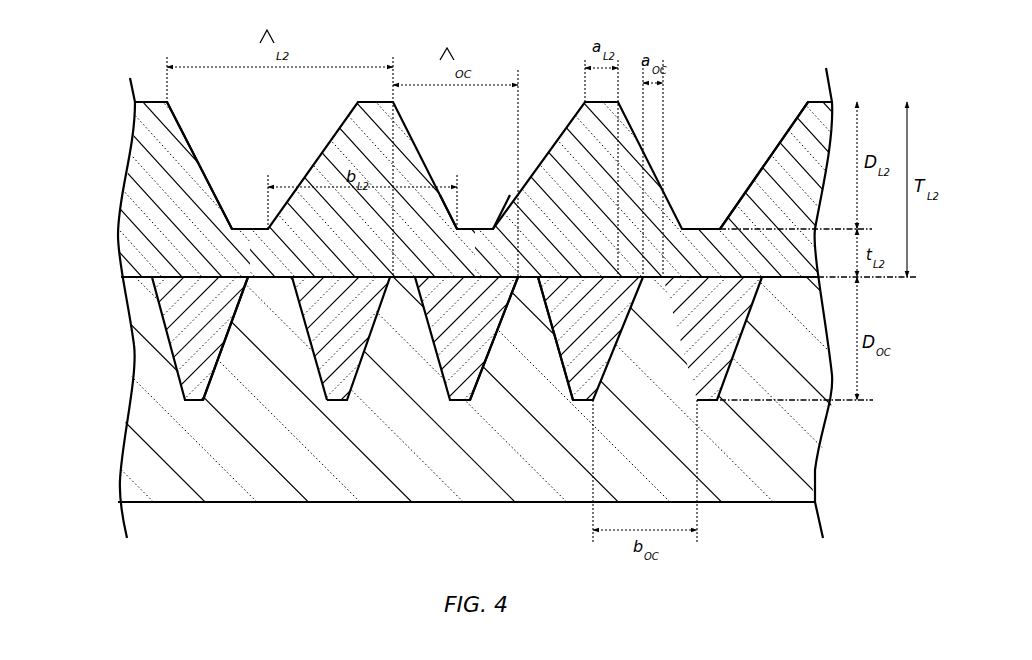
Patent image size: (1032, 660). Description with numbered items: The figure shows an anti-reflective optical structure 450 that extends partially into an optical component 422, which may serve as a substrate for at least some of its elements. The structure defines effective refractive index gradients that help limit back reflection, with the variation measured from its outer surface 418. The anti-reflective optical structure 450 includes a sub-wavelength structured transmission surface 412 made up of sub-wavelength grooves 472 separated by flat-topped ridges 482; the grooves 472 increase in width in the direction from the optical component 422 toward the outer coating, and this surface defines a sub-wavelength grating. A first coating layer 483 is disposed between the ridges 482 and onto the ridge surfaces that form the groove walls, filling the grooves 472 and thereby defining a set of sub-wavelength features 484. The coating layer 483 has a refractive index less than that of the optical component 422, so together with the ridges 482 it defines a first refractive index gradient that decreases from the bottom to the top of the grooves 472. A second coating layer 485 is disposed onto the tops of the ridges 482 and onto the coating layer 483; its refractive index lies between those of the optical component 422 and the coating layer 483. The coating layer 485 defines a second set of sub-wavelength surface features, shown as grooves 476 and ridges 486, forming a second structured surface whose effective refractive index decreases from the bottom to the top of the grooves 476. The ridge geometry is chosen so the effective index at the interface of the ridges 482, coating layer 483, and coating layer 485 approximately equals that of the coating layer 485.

The anti-reflective optical structure 450 is at (915, 102).
The optical component 422 is at (820, 434).
The ridges 486 is at (147, 97).
The outer surface 418 is at (823, 92).
The grooves 476 is at (478, 197).
The coating layer 485 is at (765, 268).
The sub-wavelength structured transmission surface 412 is at (176, 383).
The sub-wavelength grooves 472 is at (215, 389).
The sub-wavelength features 484 is at (465, 360).
The ridges 482 is at (523, 388).
The coating layer 483 is at (585, 380).